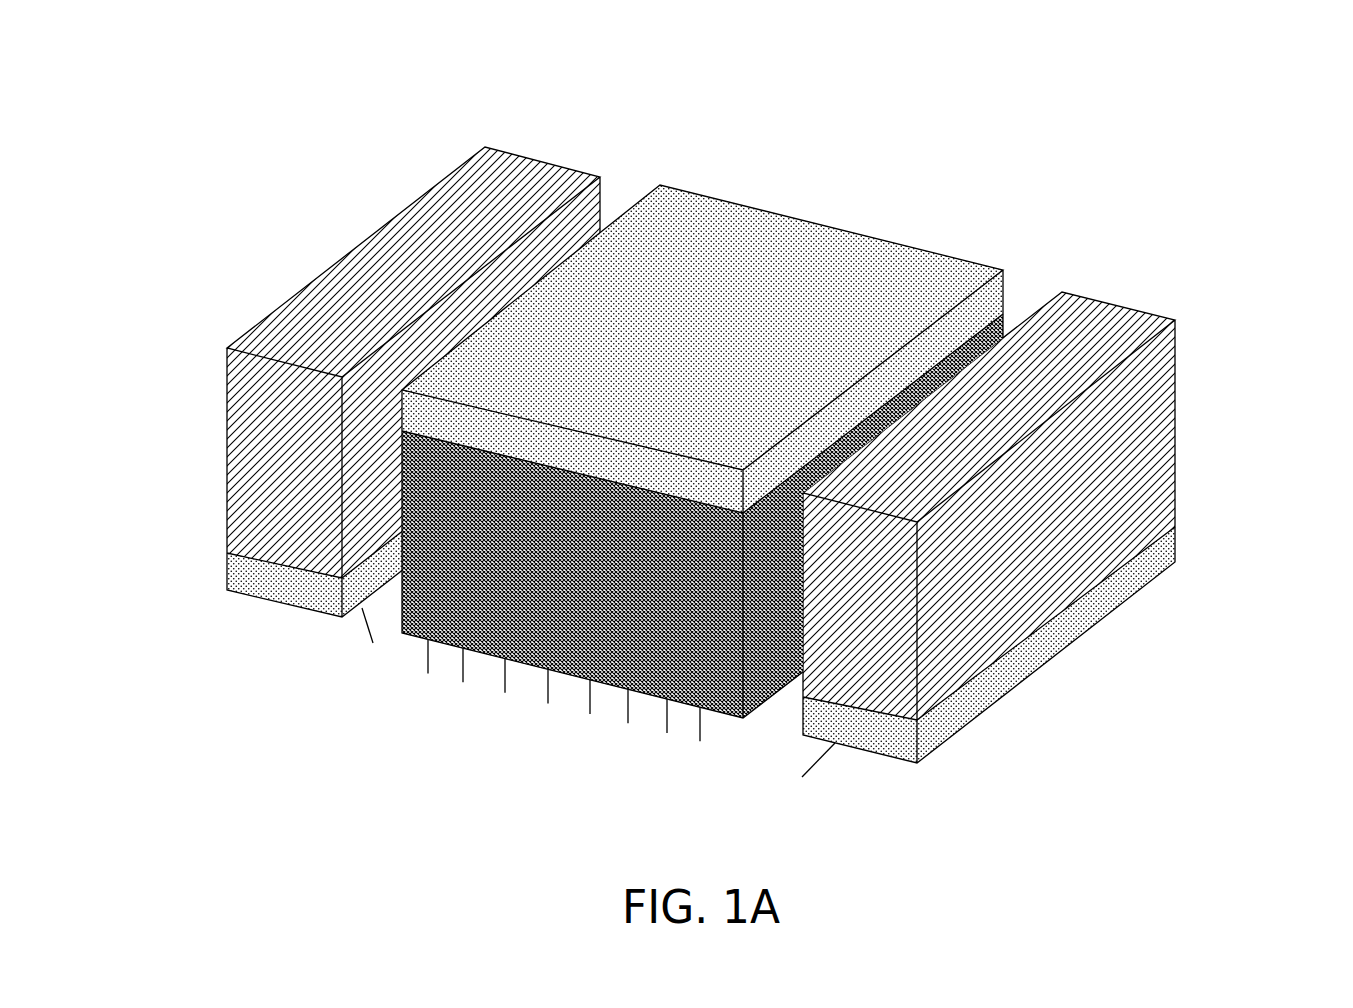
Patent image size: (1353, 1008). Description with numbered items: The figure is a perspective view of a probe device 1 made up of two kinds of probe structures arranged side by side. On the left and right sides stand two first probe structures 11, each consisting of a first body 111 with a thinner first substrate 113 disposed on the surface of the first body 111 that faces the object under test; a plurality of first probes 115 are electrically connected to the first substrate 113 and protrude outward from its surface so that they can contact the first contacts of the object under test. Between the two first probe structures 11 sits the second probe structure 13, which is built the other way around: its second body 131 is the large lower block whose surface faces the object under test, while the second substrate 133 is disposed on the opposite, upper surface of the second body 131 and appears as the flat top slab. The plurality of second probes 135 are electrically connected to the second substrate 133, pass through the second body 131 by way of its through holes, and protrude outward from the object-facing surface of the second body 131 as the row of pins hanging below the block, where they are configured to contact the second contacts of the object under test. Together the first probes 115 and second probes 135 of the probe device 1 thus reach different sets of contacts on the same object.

The probe device 1 is at (215, 170).
The first probe structure 11 is at (593, 143).
The first body 111 is at (227, 456).
The first substrate 113 is at (227, 568).
The first probes 115 is at (367, 628).
The second probe structure 13 is at (865, 185).
The second body 131 is at (743, 720).
The second substrate 133 is at (930, 252).
The second probes 135 is at (427, 670).